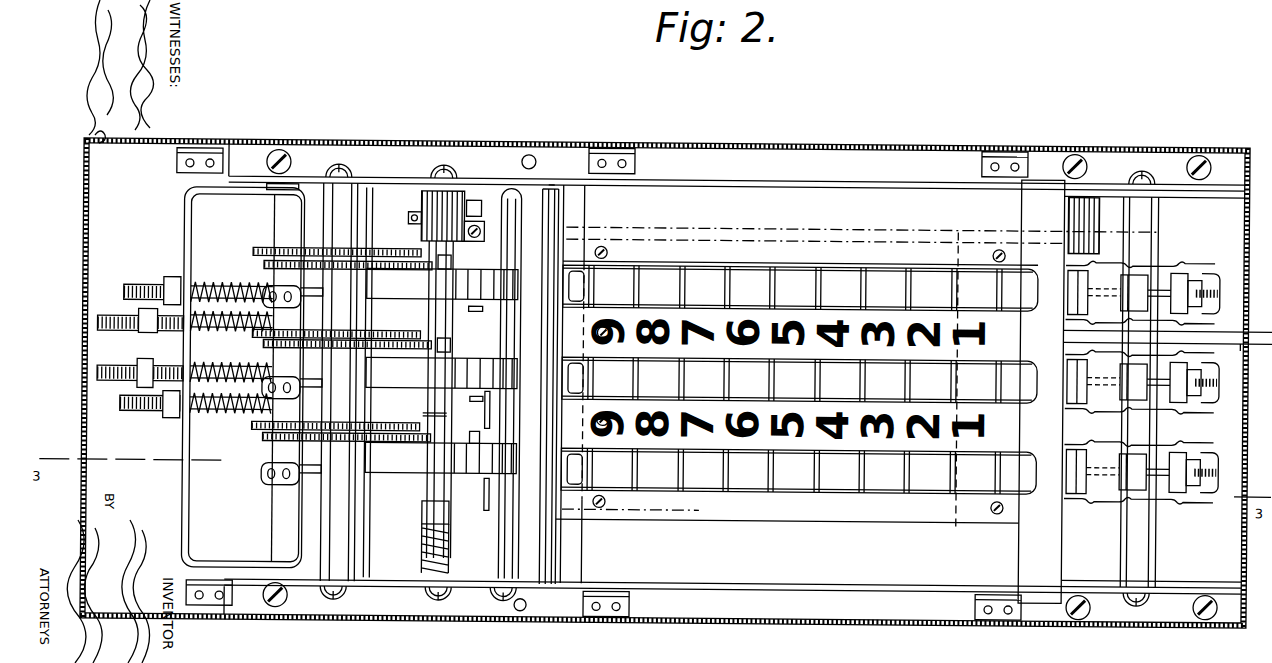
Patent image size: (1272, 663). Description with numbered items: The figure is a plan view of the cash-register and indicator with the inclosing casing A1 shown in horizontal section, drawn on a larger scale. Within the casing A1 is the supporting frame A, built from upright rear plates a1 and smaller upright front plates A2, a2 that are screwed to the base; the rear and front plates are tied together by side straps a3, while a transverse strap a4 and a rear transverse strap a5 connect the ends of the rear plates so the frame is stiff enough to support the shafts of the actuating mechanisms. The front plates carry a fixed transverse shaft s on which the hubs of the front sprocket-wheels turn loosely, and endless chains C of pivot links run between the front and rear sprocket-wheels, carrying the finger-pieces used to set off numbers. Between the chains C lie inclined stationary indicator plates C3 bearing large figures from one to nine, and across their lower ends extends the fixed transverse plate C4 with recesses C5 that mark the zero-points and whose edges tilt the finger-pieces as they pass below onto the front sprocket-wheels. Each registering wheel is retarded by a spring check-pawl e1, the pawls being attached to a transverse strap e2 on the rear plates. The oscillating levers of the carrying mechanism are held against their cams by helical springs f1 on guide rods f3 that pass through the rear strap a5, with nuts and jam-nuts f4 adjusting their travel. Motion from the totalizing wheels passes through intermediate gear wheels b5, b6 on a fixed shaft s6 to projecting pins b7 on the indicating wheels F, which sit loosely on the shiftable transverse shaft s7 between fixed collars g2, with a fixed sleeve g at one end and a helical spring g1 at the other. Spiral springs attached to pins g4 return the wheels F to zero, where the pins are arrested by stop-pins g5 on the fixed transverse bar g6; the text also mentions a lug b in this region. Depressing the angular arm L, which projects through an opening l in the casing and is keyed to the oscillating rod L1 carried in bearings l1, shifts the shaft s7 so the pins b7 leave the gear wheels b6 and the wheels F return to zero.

The supporting frame A is at (709, 403).
The casing A1 is at (647, 368).
The upright front plate A2 is at (1166, 389).
The upright rear plate a1 is at (357, 382).
The upright front plate a2 is at (1158, 392).
The side strap a3 is at (797, 398).
The transverse strap a4 is at (562, 213).
The rear transverse strap a5 is at (183, 238).
The stop lug b is at (468, 435).
The intermediate gear wheel b5 is at (337, 325).
The transmitting gear wheel b6 is at (334, 354).
The projecting pin b7 is at (457, 303).
The endless chain C is at (799, 379).
The indicator plate C3 is at (788, 374).
The fixed transverse plate C4 is at (1041, 391).
The recess C5 is at (1128, 383).
The spring check-pawl e1 is at (292, 389).
The transverse strap e2 is at (244, 372).
The indicating wheel F is at (450, 370).
The helical spring f1 is at (232, 348).
The guide rod f3 is at (141, 346).
The nut and jam-nut f4 is at (159, 347).
The fixed sleeve g is at (444, 375).
The helical spring g1 is at (448, 548).
The fixed collar g2 is at (426, 402).
The pin g4 is at (477, 456).
The stop-pin g5 is at (471, 408).
The fixed transverse bar g6 is at (439, 383).
The angular arm L is at (1114, 369).
The oscillating rod L1 is at (862, 225).
The opening l is at (1232, 358).
The bearing l1 is at (1090, 226).
The fixed transverse shaft s is at (1158, 392).
The fixed shaft s6 is at (346, 382).
The transverse shaft s7 is at (455, 180).